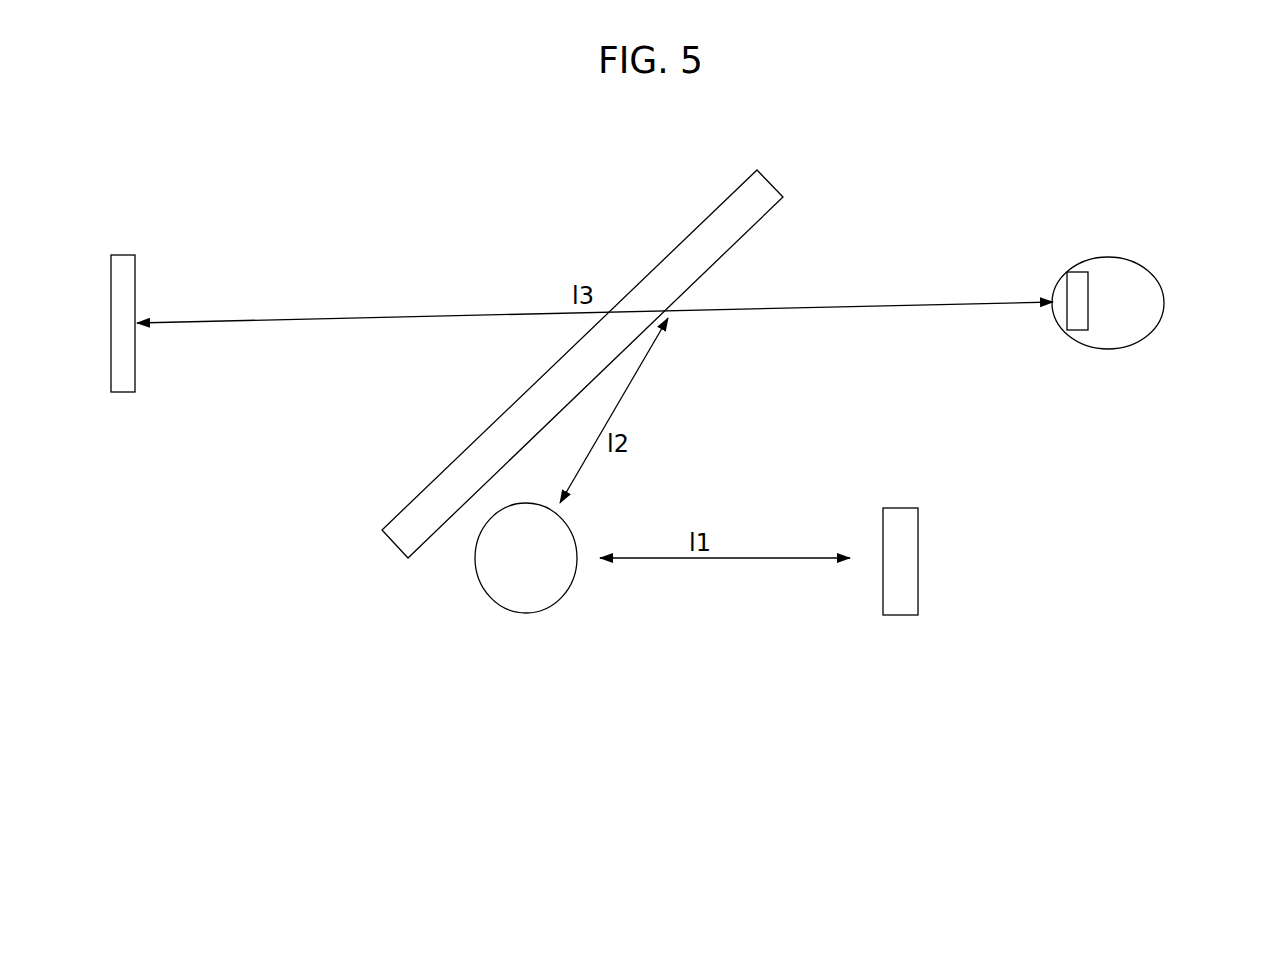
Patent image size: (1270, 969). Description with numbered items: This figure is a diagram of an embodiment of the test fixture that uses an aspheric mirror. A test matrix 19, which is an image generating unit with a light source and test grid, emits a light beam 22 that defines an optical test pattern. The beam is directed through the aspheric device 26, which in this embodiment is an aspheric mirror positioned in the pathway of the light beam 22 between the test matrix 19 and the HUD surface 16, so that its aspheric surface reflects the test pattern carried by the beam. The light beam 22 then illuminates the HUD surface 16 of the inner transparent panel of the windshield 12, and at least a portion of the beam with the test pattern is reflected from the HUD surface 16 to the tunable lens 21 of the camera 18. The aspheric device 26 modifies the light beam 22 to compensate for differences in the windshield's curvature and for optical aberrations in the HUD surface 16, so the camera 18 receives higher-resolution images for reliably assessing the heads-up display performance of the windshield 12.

The windshield 12 is at (540, 378).
The HUD surface 16 is at (668, 307).
The camera 18 is at (1133, 258).
The test matrix 19 is at (910, 578).
The tunable lens 21 is at (1077, 287).
The light beam 22 is at (630, 390).
The aspheric device 26 is at (490, 600).